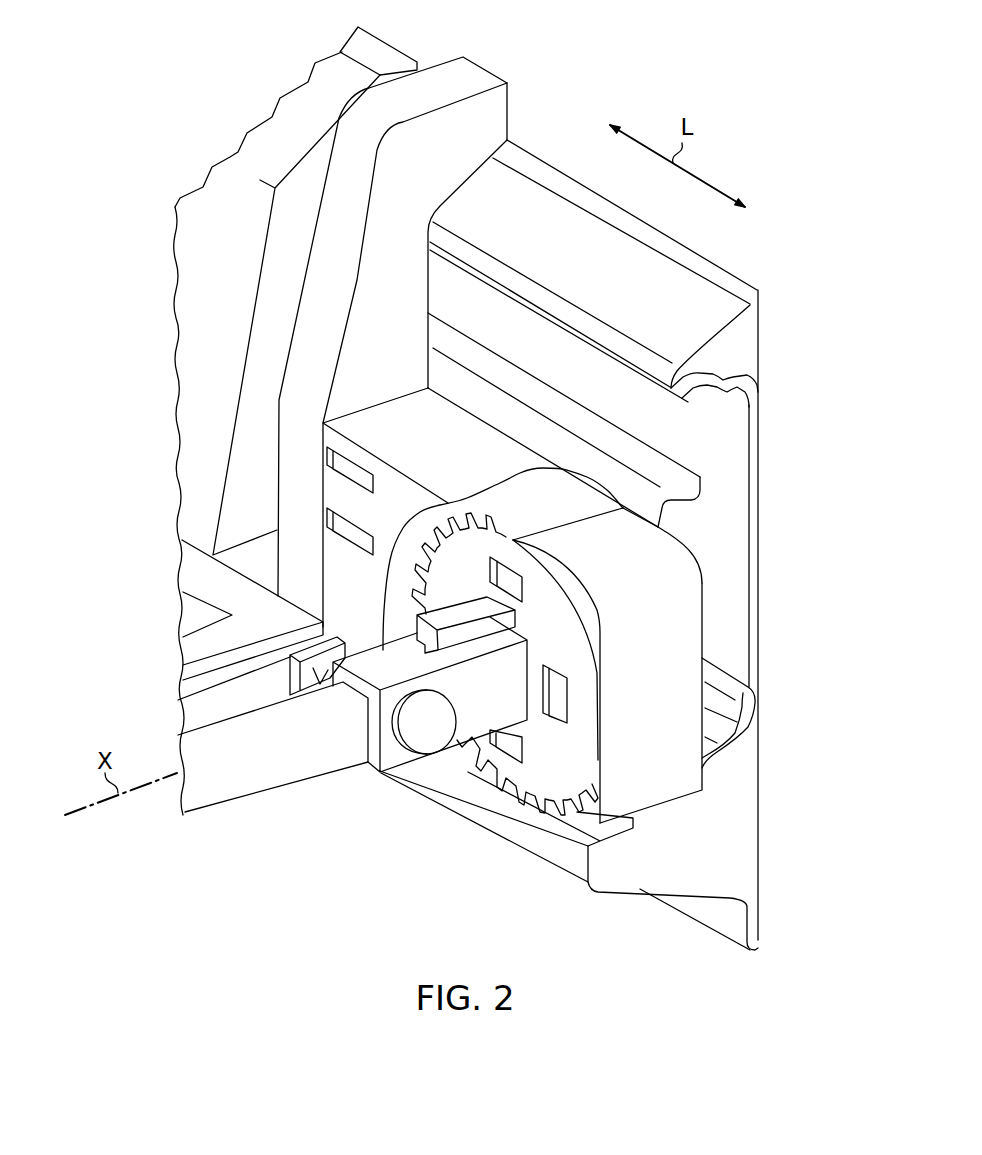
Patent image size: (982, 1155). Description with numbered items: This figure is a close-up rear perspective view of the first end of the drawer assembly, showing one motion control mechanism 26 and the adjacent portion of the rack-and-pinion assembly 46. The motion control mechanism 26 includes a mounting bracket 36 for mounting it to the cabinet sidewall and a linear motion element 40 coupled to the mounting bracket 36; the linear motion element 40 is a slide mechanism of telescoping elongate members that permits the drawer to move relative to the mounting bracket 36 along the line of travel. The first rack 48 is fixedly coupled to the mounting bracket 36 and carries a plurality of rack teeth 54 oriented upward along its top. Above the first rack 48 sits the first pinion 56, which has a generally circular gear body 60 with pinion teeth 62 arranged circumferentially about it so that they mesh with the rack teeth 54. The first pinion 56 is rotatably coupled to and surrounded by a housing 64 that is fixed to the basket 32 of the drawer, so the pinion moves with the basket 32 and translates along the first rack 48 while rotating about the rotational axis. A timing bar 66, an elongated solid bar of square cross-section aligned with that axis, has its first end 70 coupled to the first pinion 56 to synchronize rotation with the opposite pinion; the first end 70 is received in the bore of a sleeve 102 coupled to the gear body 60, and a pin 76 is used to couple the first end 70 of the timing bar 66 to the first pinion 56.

The motion control mechanism 26 is at (782, 295).
The basket 32 is at (185, 603).
The mounting bracket 36 is at (693, 327).
The linear motion element 40 is at (703, 487).
The rack-and-pinion assembly 46 is at (645, 884).
The first rack 48 is at (577, 872).
The rack teeth 54 is at (498, 805).
The first pinion 56 is at (568, 652).
The gear body 60 is at (512, 540).
The pinion teeth 62 is at (400, 600).
The housing 64 is at (663, 770).
The timing bar 66 is at (262, 790).
The first end 70 is at (350, 755).
The pin 76 is at (416, 697).
The sleeve 102 is at (365, 657).